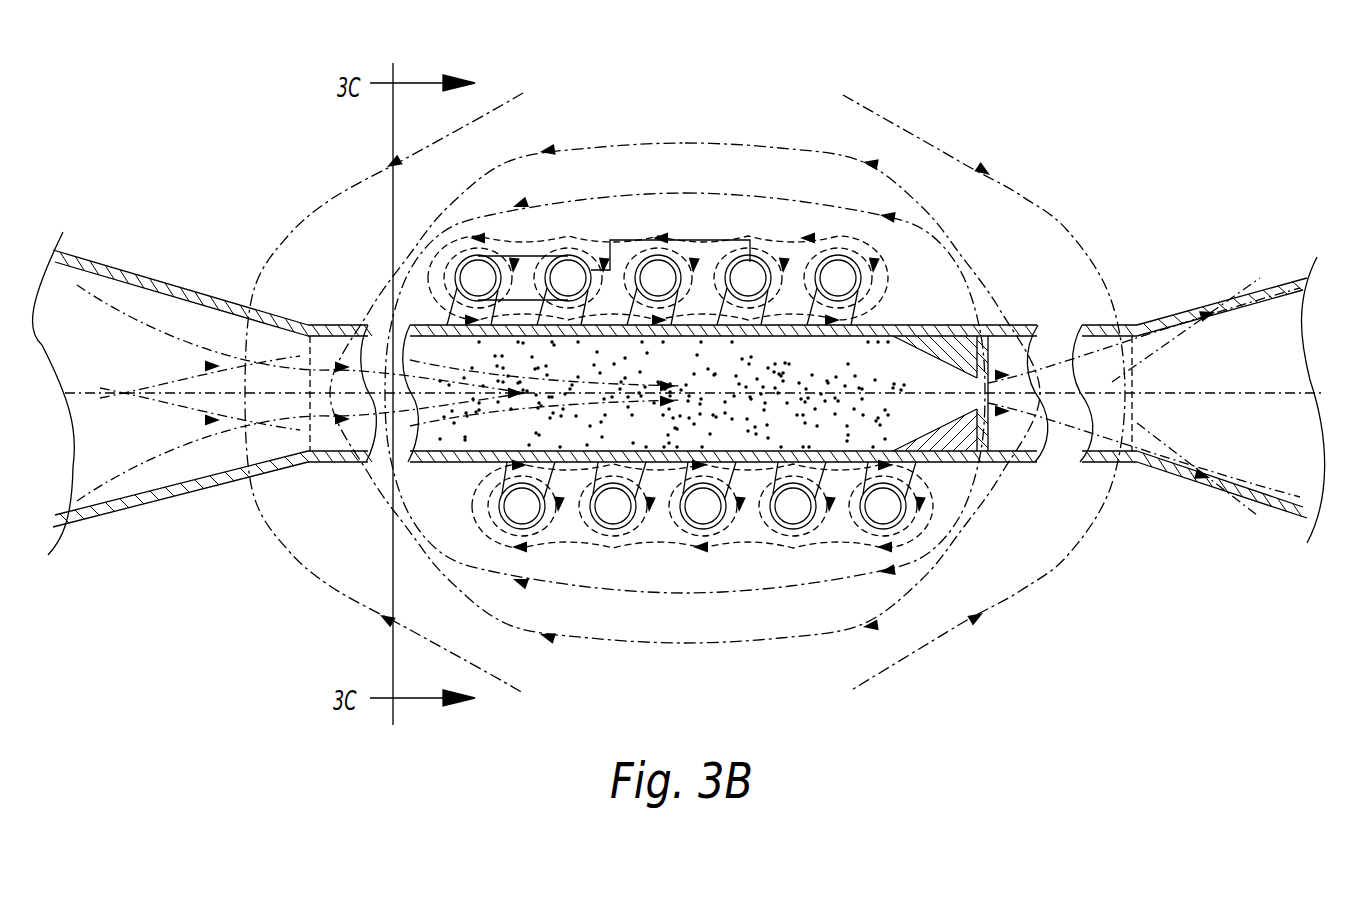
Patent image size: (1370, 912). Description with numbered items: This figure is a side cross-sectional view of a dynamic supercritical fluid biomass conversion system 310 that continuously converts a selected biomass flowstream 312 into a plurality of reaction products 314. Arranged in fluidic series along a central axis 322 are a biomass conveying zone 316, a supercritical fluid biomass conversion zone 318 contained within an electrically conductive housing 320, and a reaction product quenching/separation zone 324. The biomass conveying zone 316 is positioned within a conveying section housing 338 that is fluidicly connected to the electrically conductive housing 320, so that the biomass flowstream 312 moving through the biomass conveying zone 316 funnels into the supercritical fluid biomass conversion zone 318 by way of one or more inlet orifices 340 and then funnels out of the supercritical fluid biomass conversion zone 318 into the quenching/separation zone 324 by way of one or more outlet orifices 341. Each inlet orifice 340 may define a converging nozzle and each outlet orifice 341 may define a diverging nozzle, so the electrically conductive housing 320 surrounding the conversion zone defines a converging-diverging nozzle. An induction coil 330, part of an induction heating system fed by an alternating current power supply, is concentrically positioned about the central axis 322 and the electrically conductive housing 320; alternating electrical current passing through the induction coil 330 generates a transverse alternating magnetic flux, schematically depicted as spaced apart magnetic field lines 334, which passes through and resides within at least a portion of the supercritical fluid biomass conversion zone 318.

The dynamic supercritical fluid biomass conversion system 310 is at (785, 115).
The biomass flowstream 312 is at (175, 462).
The reaction products 314 is at (1282, 458).
The biomass conveying zone 316 is at (210, 340).
The supercritical fluid biomass conversion zone 318 is at (687, 355).
The electrically conductive housing 320 is at (893, 332).
The central axis 322 is at (100, 510).
The reaction product quenching/separation zone 324 is at (1140, 340).
The induction coil 330 is at (478, 256).
The magnetic field lines 334 is at (317, 177).
The conveying section housing 338 is at (213, 490).
The inlet orifice 340 is at (290, 463).
The outlet orifice 341 is at (1137, 440).